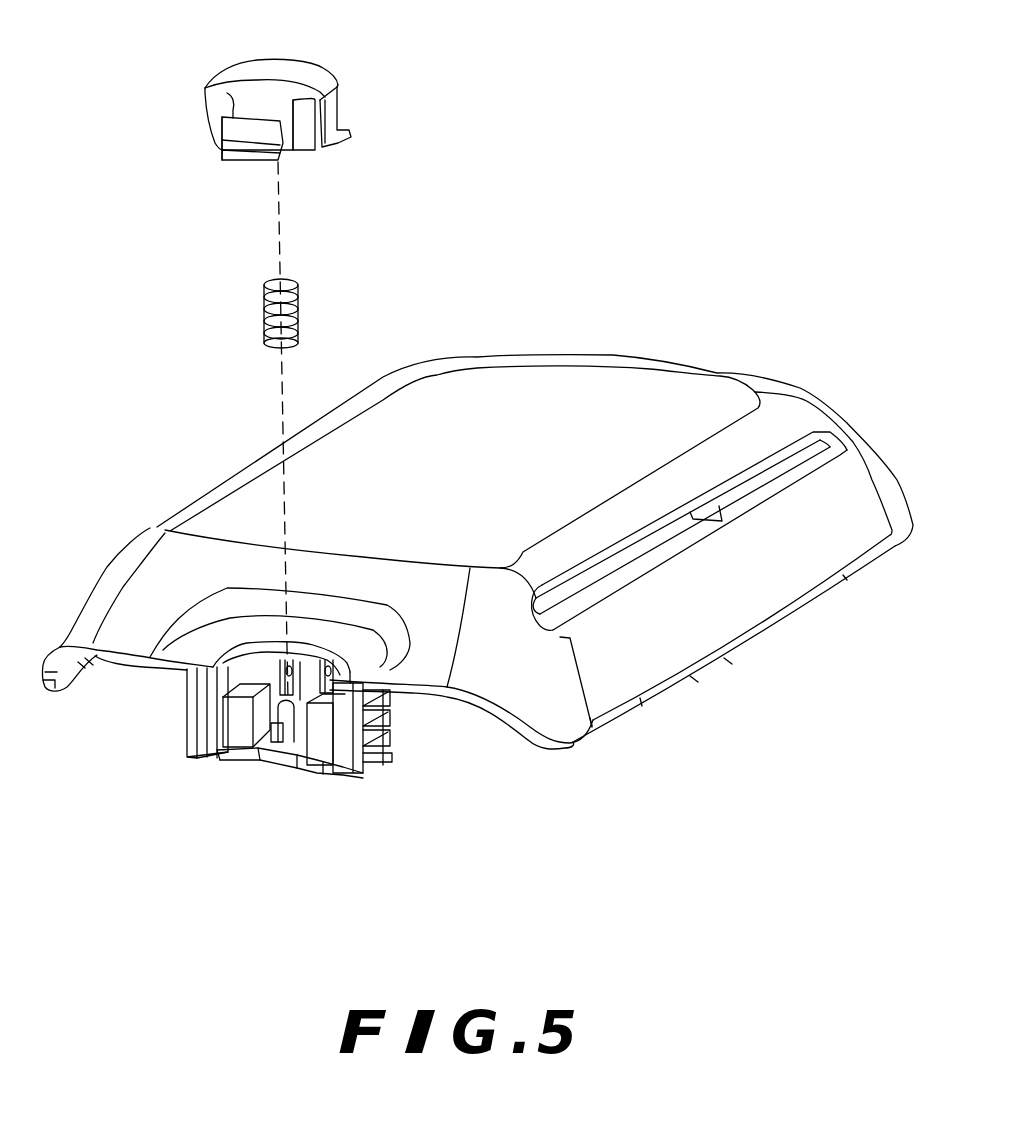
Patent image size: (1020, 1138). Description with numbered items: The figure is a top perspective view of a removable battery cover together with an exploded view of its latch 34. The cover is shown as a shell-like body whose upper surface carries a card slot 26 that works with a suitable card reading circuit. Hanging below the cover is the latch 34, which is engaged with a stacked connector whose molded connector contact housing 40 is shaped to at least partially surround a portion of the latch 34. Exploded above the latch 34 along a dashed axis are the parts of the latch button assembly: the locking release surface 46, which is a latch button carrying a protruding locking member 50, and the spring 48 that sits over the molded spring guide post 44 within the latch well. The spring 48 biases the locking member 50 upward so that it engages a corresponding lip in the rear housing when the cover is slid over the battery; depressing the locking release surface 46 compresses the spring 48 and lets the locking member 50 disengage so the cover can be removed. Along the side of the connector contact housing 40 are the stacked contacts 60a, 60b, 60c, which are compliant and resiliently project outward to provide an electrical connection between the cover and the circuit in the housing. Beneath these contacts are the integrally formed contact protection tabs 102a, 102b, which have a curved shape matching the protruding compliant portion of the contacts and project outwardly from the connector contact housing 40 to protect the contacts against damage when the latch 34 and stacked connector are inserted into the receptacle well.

The card slot 26 is at (743, 486).
The latch 34 is at (249, 850).
The connector contact housing 40 is at (358, 767).
The spring guide post 44 is at (277, 745).
The locking release surface 46 is at (272, 74).
The spring 48 is at (300, 310).
The locking member 50 is at (250, 128).
The stacked contact 60a is at (385, 698).
The stacked contact 60b is at (390, 725).
The stacked contact 60c is at (390, 748).
The contact protection tab 102a is at (383, 767).
The contact protection tab 102b is at (187, 747).